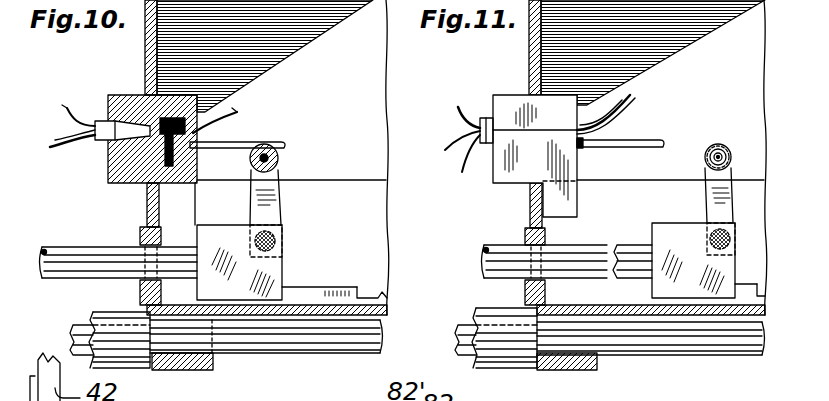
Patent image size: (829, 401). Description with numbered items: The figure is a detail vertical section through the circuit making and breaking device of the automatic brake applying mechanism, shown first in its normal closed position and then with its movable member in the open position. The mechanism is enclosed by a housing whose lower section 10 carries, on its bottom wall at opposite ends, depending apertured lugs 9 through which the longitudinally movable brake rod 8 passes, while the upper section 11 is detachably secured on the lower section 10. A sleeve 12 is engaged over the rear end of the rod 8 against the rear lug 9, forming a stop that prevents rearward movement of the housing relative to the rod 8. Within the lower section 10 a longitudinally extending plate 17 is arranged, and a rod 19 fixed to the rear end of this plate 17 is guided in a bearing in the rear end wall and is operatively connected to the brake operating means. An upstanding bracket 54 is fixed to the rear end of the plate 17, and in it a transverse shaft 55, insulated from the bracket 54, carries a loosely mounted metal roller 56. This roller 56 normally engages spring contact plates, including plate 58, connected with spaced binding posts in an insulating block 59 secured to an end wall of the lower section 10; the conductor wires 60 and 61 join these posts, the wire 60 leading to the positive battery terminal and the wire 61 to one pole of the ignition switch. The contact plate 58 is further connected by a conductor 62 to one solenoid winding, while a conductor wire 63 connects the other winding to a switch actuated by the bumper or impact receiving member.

In FIG. 10, the longitudinally movable rod 8 is at (326, 345).
In FIG. 11, the longitudinally movable rod 8 is at (697, 347).
In FIG. 10, the depending apertured ears or lugs 9 is at (204, 371).
In FIG. 11, the depending apertured ears or lugs 9 is at (574, 372).
In FIG. 10, the lower section of casing or housing 10 is at (291, 240).
In FIG. 11, the lower section of casing or housing 10 is at (670, 239).
In FIG. 10, the upper section of housing 11 is at (273, 157).
In FIG. 11, the upper section of housing 11 is at (654, 157).
In FIG. 10, the sleeve 12 is at (100, 312).
In FIG. 11, the sleeve 12 is at (478, 312).
In FIG. 10, the longitudinally extending plate 17 is at (360, 296).
In FIG. 11, the longitudinally extending plate 17 is at (748, 288).
In FIG. 10, the rod 19 is at (65, 238).
In FIG. 11, the rod 19 is at (497, 251).
In FIG. 10, the upstanding bracket 54 is at (270, 203).
In FIG. 11, the upstanding bracket 54 is at (735, 200).
In FIG. 10, the transversely positioned rod or shaft 55 is at (278, 152).
In FIG. 11, the transversely positioned rod or shaft 55 is at (713, 147).
In FIG. 10, the metal roller 56 is at (279, 163).
In FIG. 11, the metal roller 56 is at (734, 172).
In FIG. 10, the spring contact plate 58 is at (250, 142).
In FIG. 11, the spring contact plate 58 is at (646, 143).
In FIG. 10, the insulating block 59 is at (142, 183).
In FIG. 11, the insulating block 59 is at (508, 100).
In FIG. 10, the conductor wire 60 is at (72, 130).
In FIG. 11, the conductor wire 60 is at (466, 162).
In FIG. 10, the conductor wire 61 is at (80, 113).
In FIG. 11, the conductor wire 61 is at (468, 135).
In FIG. 10, the conductor 62 is at (240, 122).
In FIG. 11, the conductor 62 is at (628, 110).
In FIG. 11, the conductor wire 63 is at (468, 88).